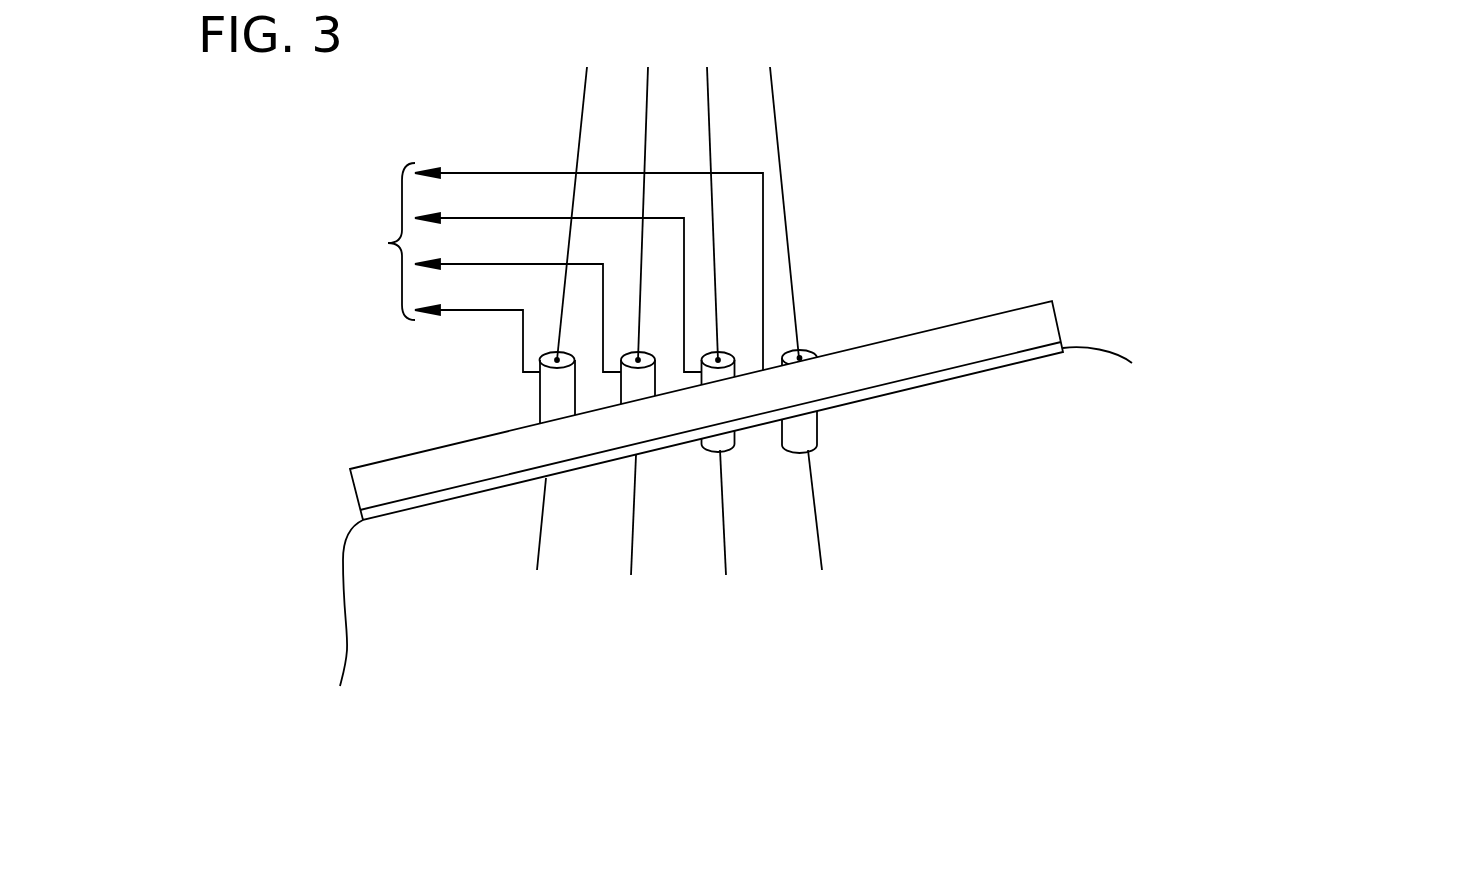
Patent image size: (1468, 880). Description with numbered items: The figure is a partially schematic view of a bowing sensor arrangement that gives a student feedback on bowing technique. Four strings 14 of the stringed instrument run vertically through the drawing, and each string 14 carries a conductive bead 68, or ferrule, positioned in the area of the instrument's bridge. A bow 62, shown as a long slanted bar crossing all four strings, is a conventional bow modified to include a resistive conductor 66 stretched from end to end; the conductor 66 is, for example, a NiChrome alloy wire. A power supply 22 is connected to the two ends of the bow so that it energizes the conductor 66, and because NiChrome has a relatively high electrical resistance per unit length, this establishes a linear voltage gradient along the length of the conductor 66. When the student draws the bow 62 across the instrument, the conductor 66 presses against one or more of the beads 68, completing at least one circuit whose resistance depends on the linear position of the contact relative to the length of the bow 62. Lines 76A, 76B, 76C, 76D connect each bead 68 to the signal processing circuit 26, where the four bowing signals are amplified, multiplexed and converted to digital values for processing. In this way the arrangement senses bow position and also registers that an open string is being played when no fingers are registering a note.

The strings 14 is at (833, 573).
The power supply 22 is at (1466, 423).
The signal processing circuit 26 is at (290, 353).
The bow 62 is at (882, 342).
The resistive conductor 66 is at (1108, 352).
The conductive bead 68 is at (540, 386).
The line 76A is at (495, 312).
The line 76B is at (542, 262).
The line 76C is at (547, 215).
The line 76D is at (522, 172).